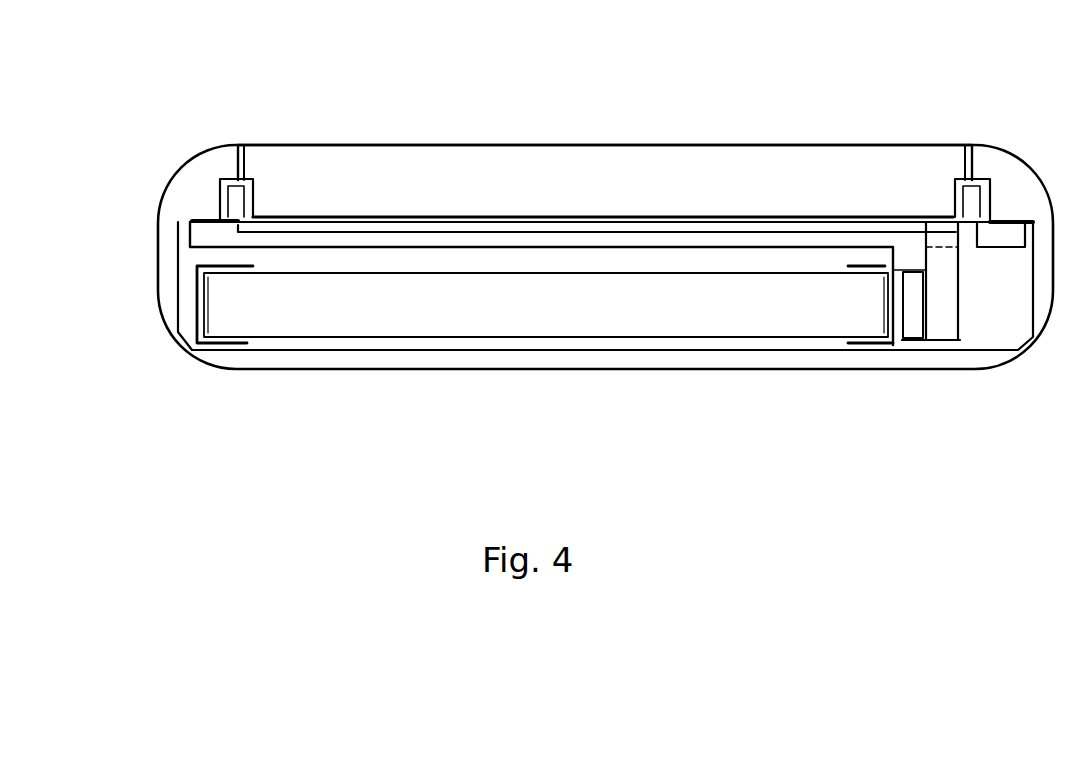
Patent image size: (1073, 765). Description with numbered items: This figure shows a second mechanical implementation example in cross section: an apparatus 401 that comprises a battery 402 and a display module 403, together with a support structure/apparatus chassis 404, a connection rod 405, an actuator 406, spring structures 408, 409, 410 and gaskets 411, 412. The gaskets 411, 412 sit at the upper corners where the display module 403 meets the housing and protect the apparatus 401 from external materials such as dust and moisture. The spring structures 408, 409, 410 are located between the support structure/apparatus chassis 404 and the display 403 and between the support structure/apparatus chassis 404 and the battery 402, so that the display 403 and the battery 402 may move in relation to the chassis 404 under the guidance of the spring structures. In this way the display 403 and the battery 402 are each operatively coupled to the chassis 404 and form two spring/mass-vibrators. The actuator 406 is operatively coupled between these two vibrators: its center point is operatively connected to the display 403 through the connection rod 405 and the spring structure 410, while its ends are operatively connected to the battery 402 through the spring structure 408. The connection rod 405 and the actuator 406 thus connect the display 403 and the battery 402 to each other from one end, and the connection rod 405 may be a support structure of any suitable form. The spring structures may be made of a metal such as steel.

The apparatus 401 is at (277, 370).
The battery 402 is at (457, 335).
The display module 403 is at (707, 145).
The support structure/apparatus chassis 404 is at (183, 250).
The connection rod 405 is at (958, 340).
The actuator 406 is at (908, 340).
The spring structure 408 is at (857, 343).
The spring structure 409 is at (192, 332).
The spring structure 410 is at (212, 216).
The gasket 411 is at (232, 180).
The gasket 412 is at (987, 180).